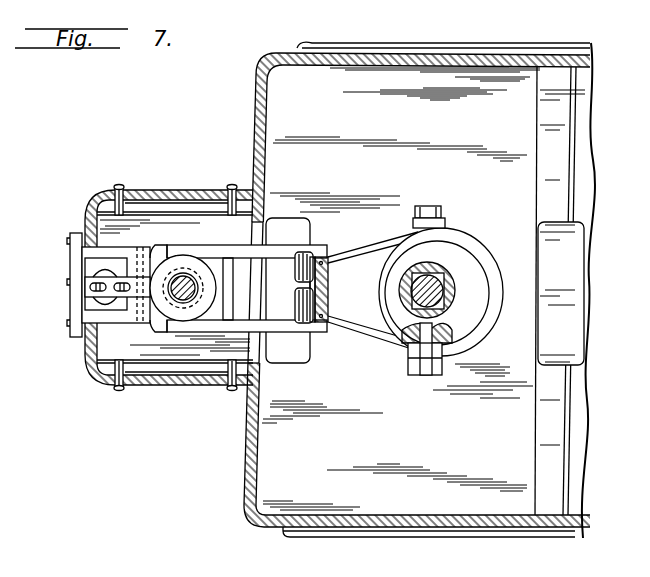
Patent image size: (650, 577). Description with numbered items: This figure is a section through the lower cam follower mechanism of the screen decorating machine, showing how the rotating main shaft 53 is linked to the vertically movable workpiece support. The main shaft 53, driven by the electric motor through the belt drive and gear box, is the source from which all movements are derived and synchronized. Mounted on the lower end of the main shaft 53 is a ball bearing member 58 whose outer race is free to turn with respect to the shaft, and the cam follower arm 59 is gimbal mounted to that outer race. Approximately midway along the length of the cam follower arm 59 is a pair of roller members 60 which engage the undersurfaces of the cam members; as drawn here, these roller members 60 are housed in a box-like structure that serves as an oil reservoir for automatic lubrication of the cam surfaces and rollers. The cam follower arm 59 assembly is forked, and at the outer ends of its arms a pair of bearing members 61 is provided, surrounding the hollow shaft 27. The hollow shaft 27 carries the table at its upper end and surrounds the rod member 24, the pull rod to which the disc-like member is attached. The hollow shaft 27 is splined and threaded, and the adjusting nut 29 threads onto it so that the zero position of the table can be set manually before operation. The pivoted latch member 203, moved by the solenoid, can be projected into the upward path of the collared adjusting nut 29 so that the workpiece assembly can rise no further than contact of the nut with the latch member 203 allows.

The pivoted latch member 203 is at (92, 273).
The bearing members 61 is at (174, 262).
The rod member 24 is at (189, 283).
The adjusting nut 29 is at (208, 289).
The hollow shaft 27 is at (200, 296).
The cam follower arm 59 is at (283, 251).
The roller members 60 is at (301, 268).
The ball bearing member 58 is at (455, 262).
The main shaft 53 is at (399, 290).